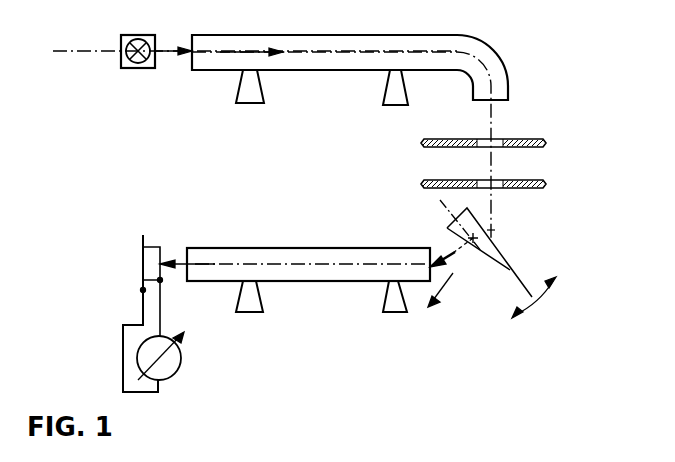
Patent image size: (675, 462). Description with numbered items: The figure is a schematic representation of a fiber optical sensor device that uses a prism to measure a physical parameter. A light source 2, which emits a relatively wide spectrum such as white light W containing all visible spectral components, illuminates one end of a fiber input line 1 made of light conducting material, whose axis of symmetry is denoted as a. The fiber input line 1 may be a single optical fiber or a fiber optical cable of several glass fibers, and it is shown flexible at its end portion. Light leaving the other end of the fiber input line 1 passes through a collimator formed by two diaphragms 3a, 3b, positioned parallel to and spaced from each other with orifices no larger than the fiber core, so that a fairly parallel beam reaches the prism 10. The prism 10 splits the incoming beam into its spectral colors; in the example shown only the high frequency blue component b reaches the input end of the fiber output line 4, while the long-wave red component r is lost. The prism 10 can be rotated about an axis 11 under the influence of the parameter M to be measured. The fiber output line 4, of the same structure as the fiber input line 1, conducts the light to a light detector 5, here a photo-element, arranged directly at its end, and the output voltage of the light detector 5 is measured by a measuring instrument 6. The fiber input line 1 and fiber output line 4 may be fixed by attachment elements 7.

The fiber input line 1 is at (371, 45).
The light source 2 is at (126, 35).
The diaphragm 3a is at (546, 143).
The diaphragm 3b is at (546, 184).
The fiber output line 4 is at (366, 248).
The light detector 5 is at (149, 251).
The measuring instrument 6 is at (181, 366).
The attachment elements 7 is at (240, 101).
The prism 10 is at (447, 228).
The axis 11 is at (491, 229).
The axis of symmetry a is at (66, 52).
The white light W is at (250, 51).
The blue component b is at (455, 258).
The red component r is at (450, 275).
The parameter to be measured M is at (541, 297).